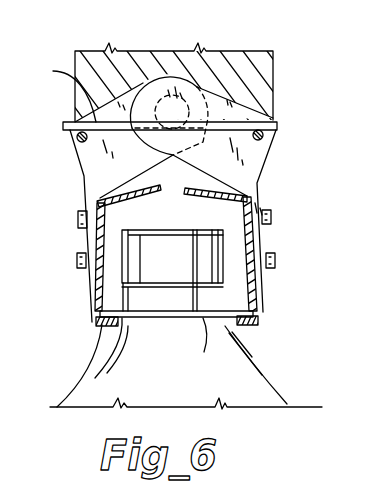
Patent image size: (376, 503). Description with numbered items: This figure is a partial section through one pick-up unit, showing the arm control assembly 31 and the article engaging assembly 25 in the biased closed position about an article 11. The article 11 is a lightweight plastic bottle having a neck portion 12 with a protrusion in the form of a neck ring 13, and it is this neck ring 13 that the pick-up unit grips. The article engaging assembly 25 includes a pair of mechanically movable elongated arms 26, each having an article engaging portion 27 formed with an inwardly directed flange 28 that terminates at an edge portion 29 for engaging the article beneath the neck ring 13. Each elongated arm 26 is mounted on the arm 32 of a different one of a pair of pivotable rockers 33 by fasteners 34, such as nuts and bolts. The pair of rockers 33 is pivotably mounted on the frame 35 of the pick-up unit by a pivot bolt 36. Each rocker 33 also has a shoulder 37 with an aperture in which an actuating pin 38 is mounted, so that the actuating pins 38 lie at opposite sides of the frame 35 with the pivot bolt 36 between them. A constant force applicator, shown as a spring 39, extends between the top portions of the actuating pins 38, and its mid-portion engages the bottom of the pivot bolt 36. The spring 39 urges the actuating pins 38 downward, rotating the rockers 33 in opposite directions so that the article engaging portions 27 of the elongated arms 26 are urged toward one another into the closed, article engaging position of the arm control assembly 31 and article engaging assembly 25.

The article 11 is at (247, 388).
The neck portion 12 is at (268, 300).
The neck ring 13 is at (151, 348).
The article engaging assembly 25 is at (78, 301).
The elongated arm 26 is at (90, 310).
The article engaging portion 27 is at (101, 331).
The inwardly directed flange 28 is at (257, 285).
The edge portion 29 is at (243, 333).
The arm control assembly 31 is at (300, 135).
The arm 32 is at (270, 243).
The pivotable rocker 33 is at (266, 165).
The fastener 34 is at (74, 222).
The frame 35 is at (262, 73).
The pivot bolt 36 is at (158, 96).
The shoulder 37 is at (74, 180).
The actuating pin 38 is at (77, 143).
The spring 39 is at (58, 92).